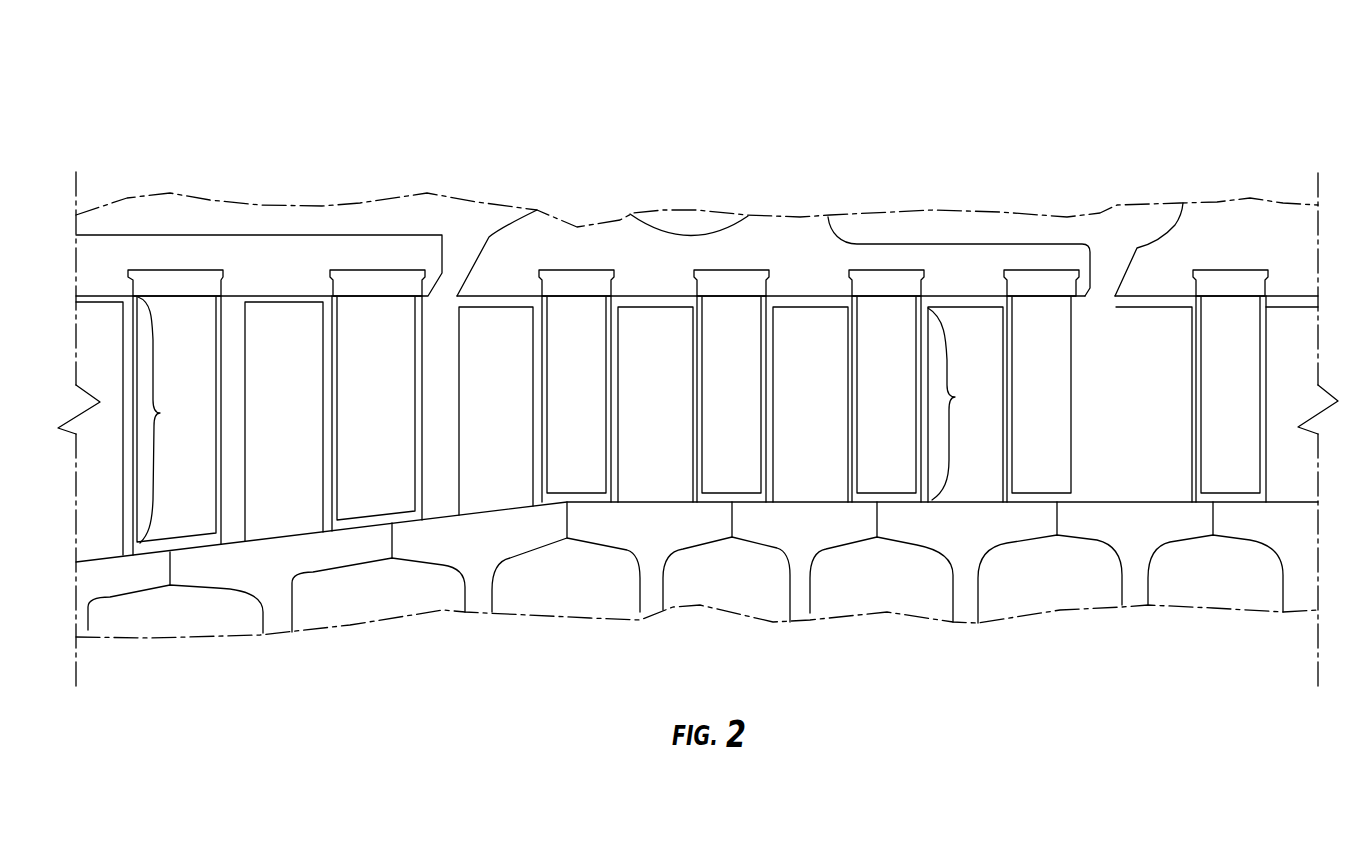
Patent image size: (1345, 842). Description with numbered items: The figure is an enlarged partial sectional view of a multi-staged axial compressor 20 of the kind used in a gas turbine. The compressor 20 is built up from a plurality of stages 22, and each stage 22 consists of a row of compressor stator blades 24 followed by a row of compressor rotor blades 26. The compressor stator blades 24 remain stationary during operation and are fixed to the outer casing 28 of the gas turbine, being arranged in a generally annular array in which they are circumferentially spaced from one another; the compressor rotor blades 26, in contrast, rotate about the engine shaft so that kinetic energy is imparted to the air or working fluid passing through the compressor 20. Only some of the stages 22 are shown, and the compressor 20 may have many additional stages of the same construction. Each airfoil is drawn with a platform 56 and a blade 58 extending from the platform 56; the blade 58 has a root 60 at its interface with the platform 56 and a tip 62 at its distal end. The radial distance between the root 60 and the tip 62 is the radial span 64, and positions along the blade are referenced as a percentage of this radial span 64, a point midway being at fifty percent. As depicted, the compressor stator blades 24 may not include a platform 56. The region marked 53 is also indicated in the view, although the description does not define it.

The multi-staged axial compressor 20 is at (422, 155).
The stage 22 is at (694, 267).
The compressor stator blade 24 is at (198, 513).
The compressor rotor blade 26 is at (667, 485).
The outer casing 28 is at (870, 257).
The break line / lamination stack 53 is at (480, 373).
The platform 56 is at (978, 528).
The blade 58 is at (197, 372).
The root 60 is at (140, 540).
The tip 62 is at (135, 297).
The radial span 64 is at (347, 683).